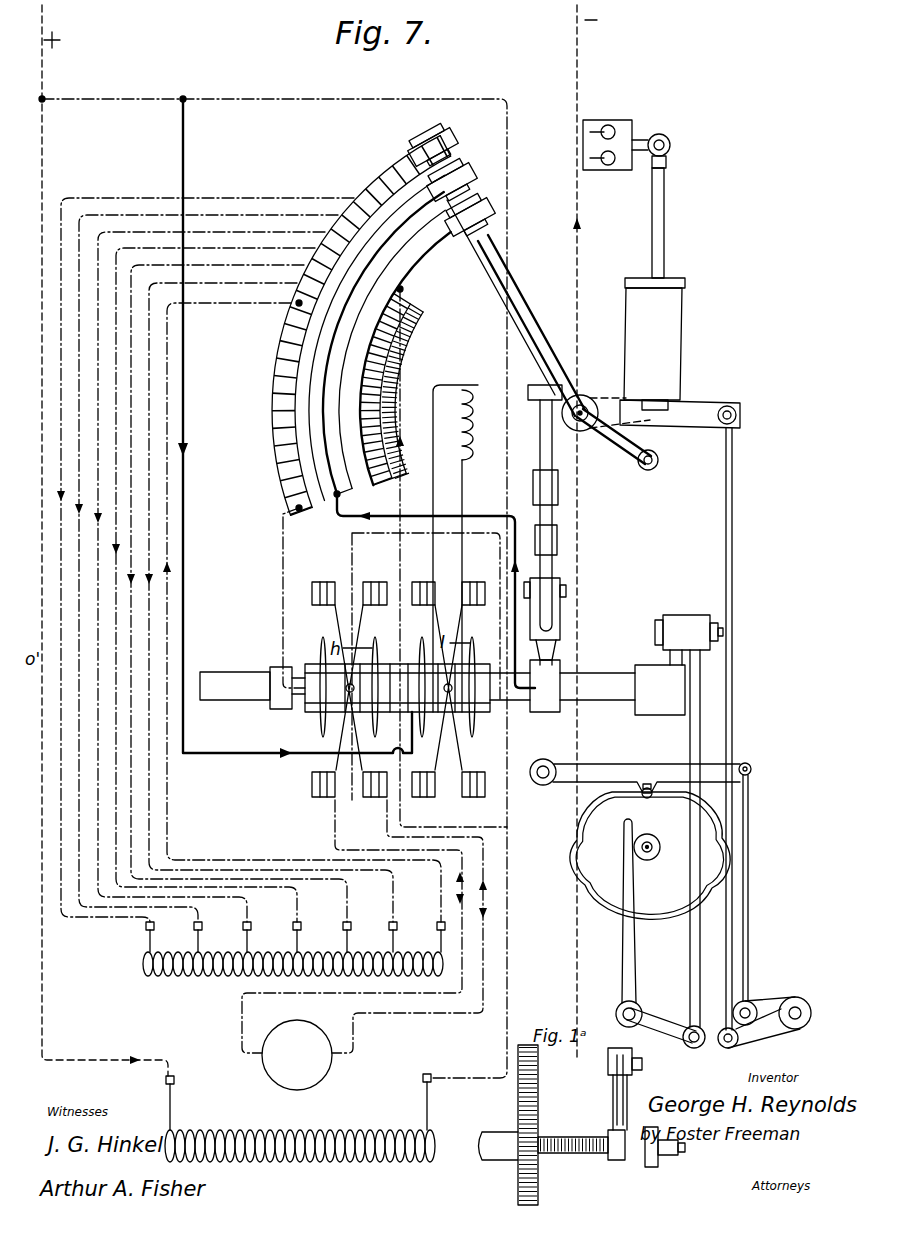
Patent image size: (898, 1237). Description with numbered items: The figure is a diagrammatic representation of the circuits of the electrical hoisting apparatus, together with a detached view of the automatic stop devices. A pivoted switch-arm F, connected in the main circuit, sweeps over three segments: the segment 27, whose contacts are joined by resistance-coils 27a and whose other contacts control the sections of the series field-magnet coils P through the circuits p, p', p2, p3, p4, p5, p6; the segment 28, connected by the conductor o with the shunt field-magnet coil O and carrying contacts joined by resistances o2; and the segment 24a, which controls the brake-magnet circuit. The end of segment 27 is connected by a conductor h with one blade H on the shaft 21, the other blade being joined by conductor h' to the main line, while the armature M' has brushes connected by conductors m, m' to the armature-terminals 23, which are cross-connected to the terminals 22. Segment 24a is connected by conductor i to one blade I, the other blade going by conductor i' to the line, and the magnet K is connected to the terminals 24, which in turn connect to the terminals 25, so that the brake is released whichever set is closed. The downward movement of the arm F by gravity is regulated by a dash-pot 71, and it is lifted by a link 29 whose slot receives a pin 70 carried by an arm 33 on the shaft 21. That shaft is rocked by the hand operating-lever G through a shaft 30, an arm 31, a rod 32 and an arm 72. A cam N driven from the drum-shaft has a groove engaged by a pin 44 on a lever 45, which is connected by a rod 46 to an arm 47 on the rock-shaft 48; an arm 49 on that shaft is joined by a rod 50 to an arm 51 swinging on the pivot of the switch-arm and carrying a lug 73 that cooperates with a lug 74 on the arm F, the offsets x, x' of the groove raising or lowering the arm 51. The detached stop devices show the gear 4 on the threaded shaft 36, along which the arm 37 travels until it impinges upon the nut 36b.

In FIG. 1a, the gear 4 is at (539, 1108).
In FIG. 7, the shaft 21 is at (252, 688).
In FIG. 7, the armature-terminals 22 is at (363, 592).
In FIG. 7, the armature-terminals 23 is at (365, 797).
In FIG. 7, the terminals 24 is at (460, 592).
In FIG. 7, the segment 24a is at (320, 406).
In FIG. 7, the terminals 25 is at (460, 797).
In FIG. 7, the segment 27 is at (283, 342).
In FIG. 7, the resistance-coils 27a is at (419, 180).
In FIG. 7, the segment 28 is at (421, 270).
In FIG. 7, the link 29 is at (558, 540).
In FIG. 7, the shaft 30 is at (616, 1012).
In FIG. 7, the arm 31 is at (665, 1020).
In FIG. 7, the rod 32 is at (702, 742).
In FIG. 7, the arm 33 is at (558, 628).
In FIG. 1a, the shaft 36 is at (500, 1164).
In FIG. 1a, the nut 36b is at (624, 1162).
In FIG. 1a, the arm 37 is at (608, 1052).
In FIG. 7, the pin 44 is at (650, 785).
In FIG. 7, the lever 45 is at (596, 763).
In FIG. 7, the rod 46 is at (762, 888).
In FIG. 7, the arm 47 is at (762, 1005).
In FIG. 7, the rock-shaft 48 is at (797, 1008).
In FIG. 7, the arm 49 is at (751, 1043).
In FIG. 7, the rod 50 is at (734, 522).
In FIG. 7, the arm 51 is at (705, 403).
In FIG. 7, the pin 70 is at (566, 586).
In FIG. 7, the dash-pot 71 is at (634, 265).
In FIG. 7, the arm 72 is at (674, 618).
In FIG. 7, the lug 73 is at (597, 396).
In FIG. 7, the lug 74 is at (618, 454).
In FIG. 7, the switch-arm F is at (520, 312).
In FIG. 7, the magnet K is at (455, 534).
In FIG. 7, the hand operating-lever G is at (622, 955).
In FIG. 7, the cam N is at (647, 861).
In FIG. 7, the series field-magnet coils P is at (293, 951).
In FIG. 7, the shunt field-magnet coil O is at (300, 1158).
In FIG. 7, the armature M' is at (297, 1067).
In FIG. 7, the offset x is at (675, 855).
In FIG. 7, the offset x' is at (574, 840).
In FIG. 7, the conductor m is at (353, 926).
In FIG. 7, the conductor m' is at (409, 926).
In FIG. 7, the conductor h is at (272, 600).
In FIG. 7, the conductor h' is at (489, 419).
In FIG. 7, the conductor i is at (436, 589).
In FIG. 7, the conductor i' is at (345, 666).
In FIG. 7, the conductor o is at (451, 556).
In FIG. 7, the resistances o2 is at (392, 380).
In FIG. 7, the circuit p is at (205, 566).
In FIG. 7, the circuit p' is at (206, 577).
In FIG. 7, the circuit p2 is at (209, 586).
In FIG. 7, the circuit p3 is at (213, 594).
In FIG. 7, the circuit p4 is at (239, 602).
In FIG. 7, the circuit p5 is at (271, 611).
In FIG. 7, the circuit p6 is at (167, 345).